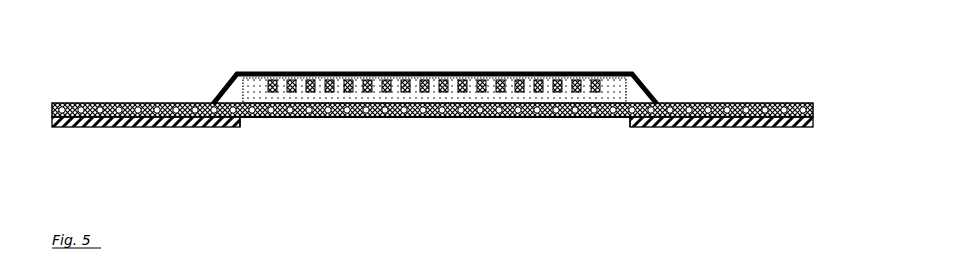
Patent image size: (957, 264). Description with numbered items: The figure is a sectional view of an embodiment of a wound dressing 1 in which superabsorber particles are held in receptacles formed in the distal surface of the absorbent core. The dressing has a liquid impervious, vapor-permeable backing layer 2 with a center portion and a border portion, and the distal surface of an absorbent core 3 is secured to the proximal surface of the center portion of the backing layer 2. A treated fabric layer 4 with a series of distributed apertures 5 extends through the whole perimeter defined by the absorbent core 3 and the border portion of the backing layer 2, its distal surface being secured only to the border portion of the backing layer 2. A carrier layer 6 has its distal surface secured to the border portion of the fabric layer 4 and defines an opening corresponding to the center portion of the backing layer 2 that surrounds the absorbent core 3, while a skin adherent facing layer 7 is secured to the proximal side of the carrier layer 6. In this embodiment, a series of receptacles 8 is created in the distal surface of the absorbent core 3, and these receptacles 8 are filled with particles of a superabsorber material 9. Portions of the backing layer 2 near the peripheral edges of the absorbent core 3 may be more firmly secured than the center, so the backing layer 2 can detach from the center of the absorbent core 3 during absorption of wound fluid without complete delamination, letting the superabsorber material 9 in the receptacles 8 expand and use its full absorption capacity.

The wound dressing 1 is at (463, 103).
The backing layer 2 is at (222, 90).
The absorbent core 3 is at (361, 90).
The treated fabric layer 4 is at (471, 119).
The distributed apertures 5 is at (392, 121).
The carrier layer 6 is at (243, 125).
The skin adherent facing layer 7 is at (151, 129).
The receptacles 8 is at (504, 98).
The superabsorber material 9 is at (499, 84).